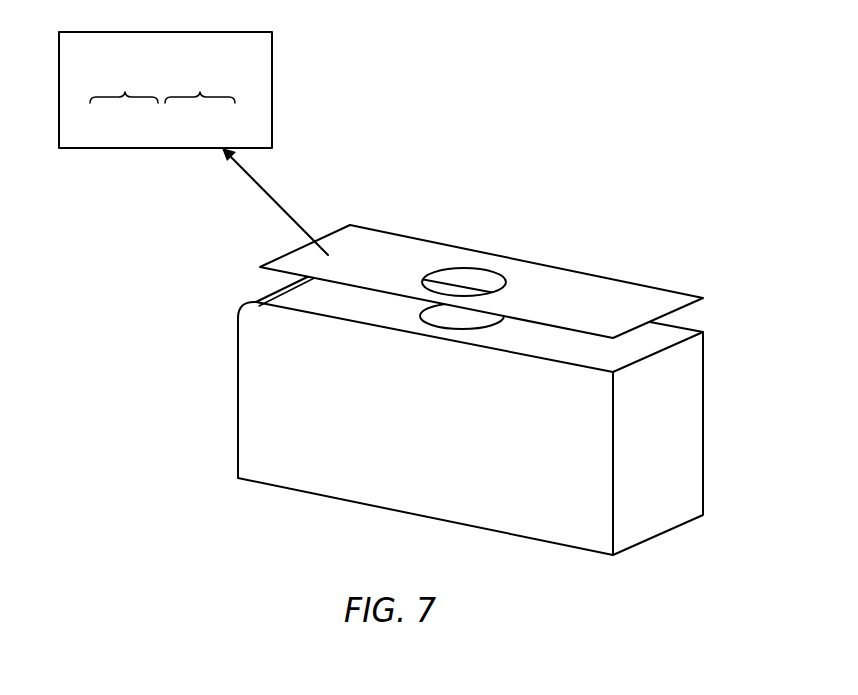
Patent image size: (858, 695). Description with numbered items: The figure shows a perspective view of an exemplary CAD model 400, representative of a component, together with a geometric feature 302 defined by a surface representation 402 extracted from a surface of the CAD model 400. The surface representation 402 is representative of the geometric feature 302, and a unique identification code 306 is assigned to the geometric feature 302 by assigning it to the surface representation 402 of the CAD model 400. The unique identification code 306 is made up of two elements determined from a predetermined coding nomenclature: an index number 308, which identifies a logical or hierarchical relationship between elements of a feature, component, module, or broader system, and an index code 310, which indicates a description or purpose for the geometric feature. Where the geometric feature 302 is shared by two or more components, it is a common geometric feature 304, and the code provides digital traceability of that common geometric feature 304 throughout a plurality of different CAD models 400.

The geometric feature 302 is at (690, 332).
The common geometric feature 304 is at (410, 227).
The unique identification code 306 is at (157, 143).
The index number 308 is at (124, 99).
The index code 310 is at (200, 99).
The CAD model 400 is at (715, 420).
The surface representation 402 is at (597, 285).